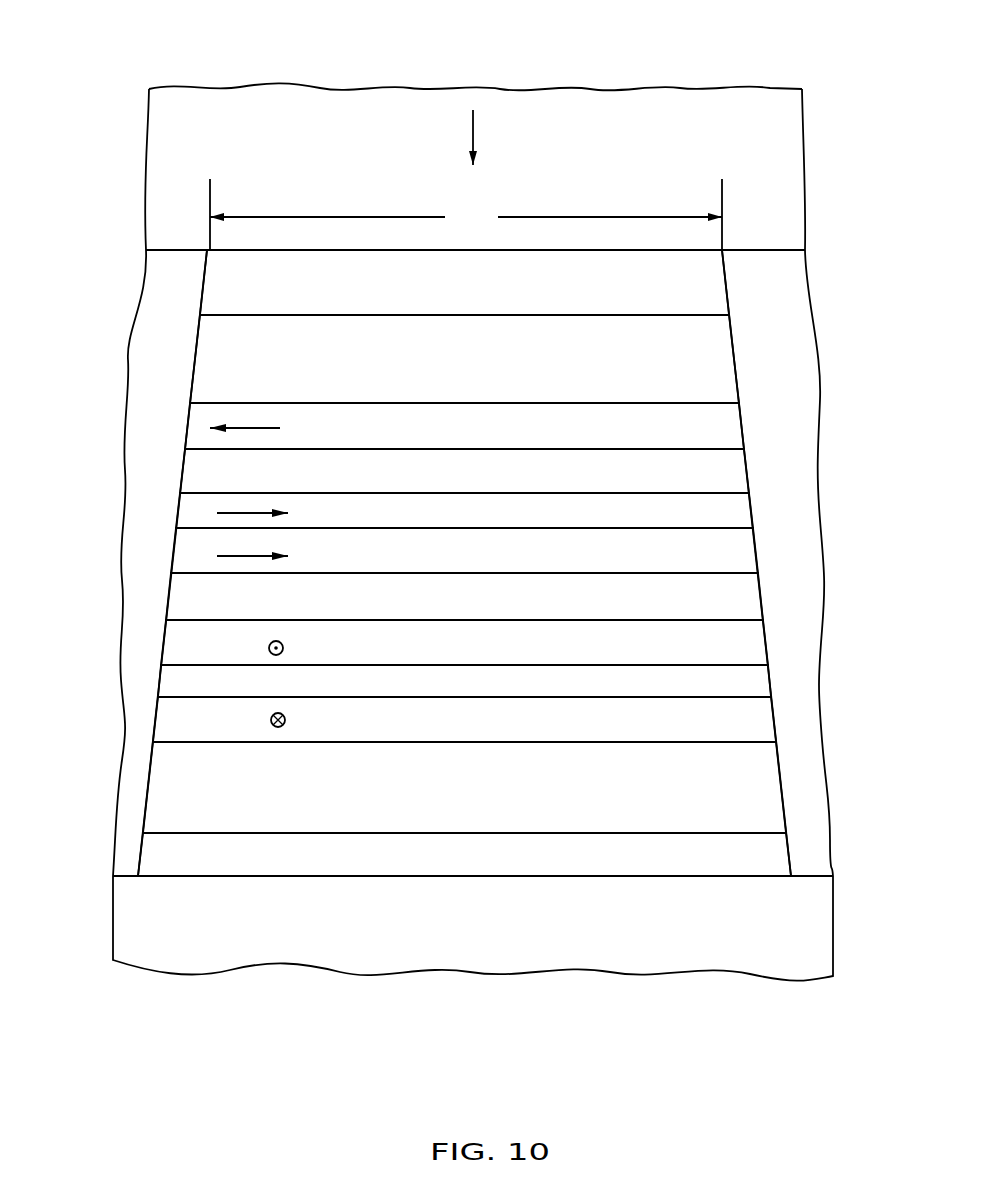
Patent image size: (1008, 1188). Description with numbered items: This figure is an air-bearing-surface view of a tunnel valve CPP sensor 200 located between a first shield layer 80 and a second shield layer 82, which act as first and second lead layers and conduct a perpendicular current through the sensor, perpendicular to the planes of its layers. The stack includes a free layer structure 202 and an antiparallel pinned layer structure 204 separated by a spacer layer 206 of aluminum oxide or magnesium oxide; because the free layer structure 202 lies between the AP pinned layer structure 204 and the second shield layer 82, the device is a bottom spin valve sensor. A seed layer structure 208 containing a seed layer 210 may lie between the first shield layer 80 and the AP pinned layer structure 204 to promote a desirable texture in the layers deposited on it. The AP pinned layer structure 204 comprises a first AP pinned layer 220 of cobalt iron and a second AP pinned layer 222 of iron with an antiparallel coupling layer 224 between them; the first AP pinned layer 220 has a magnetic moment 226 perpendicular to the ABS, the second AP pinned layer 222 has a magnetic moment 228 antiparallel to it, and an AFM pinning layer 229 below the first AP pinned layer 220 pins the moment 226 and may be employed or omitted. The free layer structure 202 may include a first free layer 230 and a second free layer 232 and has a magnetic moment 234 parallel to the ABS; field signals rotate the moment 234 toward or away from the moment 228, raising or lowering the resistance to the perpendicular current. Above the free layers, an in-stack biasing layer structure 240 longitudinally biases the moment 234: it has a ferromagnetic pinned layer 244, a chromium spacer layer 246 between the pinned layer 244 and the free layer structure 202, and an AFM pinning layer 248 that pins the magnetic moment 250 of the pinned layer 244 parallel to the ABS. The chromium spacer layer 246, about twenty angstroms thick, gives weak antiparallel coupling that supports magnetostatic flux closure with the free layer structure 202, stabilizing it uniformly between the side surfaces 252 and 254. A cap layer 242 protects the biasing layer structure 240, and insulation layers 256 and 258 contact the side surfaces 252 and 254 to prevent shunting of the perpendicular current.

The tunnel valve CPP sensor 200 is at (878, 876).
The second shield layer 82 is at (632, 156).
The first shield layer 80 is at (703, 946).
The in-stack biasing layer structure 240 is at (57, 493).
The cap layer 242 is at (708, 301).
The antiferromagnetic pinning layer 248 is at (708, 369).
The pinned layer 244 is at (708, 439).
The magnetic moment of pinned layer 250 is at (257, 428).
The chromium spacer layer 246 is at (708, 484).
The side surface 252 is at (190, 438).
The side surface 254 is at (745, 475).
The insulation layer 256 is at (186, 366).
The insulation layer 258 is at (791, 383).
The free layer structure 202 is at (57, 493).
The second free layer 232 is at (708, 528).
The first free layer 230 is at (708, 564).
The magnetic moment of free layer structure 234 is at (230, 513).
The spacer layer 206 is at (708, 609).
The antiparallel pinned layer structure 204 is at (66, 620).
The second AP pinned layer 222 is at (708, 656).
The magnetic moment of second AP pinned layer 228 is at (268, 648).
The antiparallel coupling layer 224 is at (708, 696).
The first AP pinned layer 220 is at (708, 736).
The magnetic moment of first AP pinned layer 226 is at (270, 720).
The seed layer structure 208 is at (95, 742).
The AFM pinning layer 229 is at (708, 803).
The seed layer structure 210 is at (708, 869).